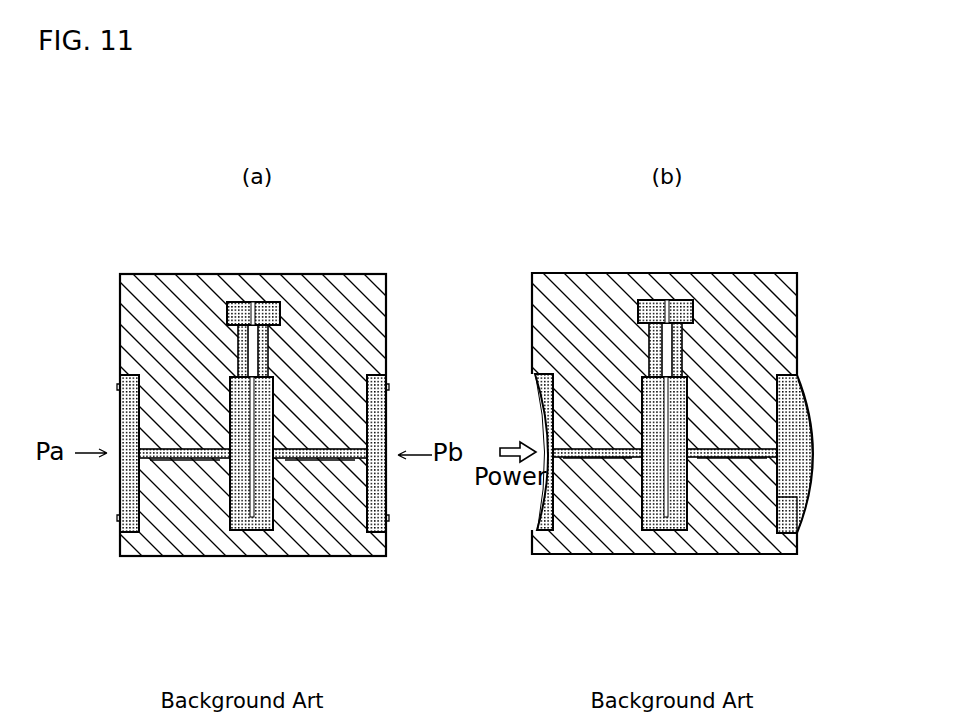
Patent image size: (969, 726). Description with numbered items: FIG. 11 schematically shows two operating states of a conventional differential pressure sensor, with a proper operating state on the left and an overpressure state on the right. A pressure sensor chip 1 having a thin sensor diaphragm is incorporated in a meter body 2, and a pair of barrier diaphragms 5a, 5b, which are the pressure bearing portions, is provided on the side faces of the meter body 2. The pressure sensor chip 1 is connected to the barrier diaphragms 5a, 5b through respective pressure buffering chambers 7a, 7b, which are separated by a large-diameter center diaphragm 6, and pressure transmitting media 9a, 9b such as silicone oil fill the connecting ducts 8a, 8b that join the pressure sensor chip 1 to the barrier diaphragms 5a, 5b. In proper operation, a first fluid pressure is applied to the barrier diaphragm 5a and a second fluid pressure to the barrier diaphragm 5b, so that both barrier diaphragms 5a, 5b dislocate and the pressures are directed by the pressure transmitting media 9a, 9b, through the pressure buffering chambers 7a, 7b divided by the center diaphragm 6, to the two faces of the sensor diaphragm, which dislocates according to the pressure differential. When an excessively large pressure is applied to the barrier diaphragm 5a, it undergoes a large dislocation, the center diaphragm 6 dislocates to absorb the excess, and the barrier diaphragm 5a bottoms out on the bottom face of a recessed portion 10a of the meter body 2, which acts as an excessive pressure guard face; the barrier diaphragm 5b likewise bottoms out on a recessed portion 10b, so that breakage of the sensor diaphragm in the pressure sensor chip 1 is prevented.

The pressure sensor chip 1 is at (265, 300).
The meter body 2 is at (120, 296).
The barrier diaphragm 5a is at (120, 413).
The barrier diaphragm 5b is at (385, 488).
The center diaphragm 6 is at (252, 483).
The pressure buffering chamber 7a is at (230, 378).
The pressure buffering chamber 7b is at (263, 397).
The connecting duct 8a is at (182, 460).
The connecting duct 8b is at (327, 460).
The pressure transmitting medium 9a is at (120, 474).
The pressure transmitting medium 9b is at (385, 413).
The recessed portion 10a is at (535, 393).
The recessed portion 10b is at (806, 503).